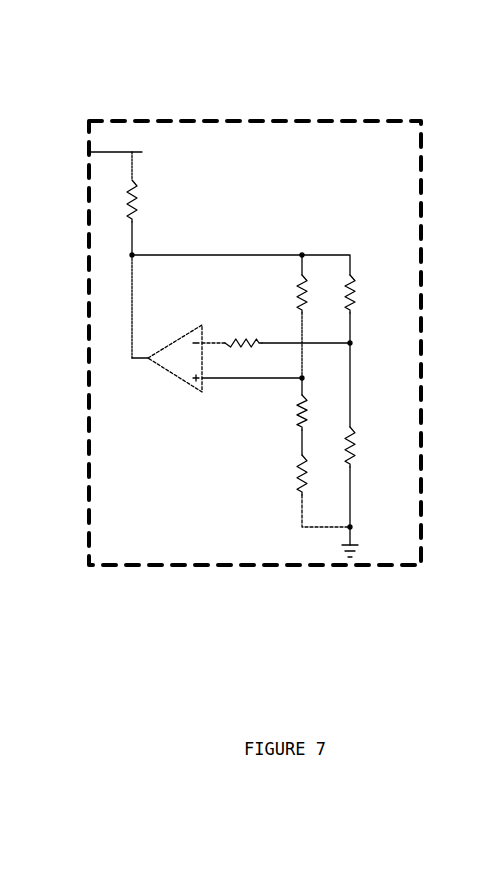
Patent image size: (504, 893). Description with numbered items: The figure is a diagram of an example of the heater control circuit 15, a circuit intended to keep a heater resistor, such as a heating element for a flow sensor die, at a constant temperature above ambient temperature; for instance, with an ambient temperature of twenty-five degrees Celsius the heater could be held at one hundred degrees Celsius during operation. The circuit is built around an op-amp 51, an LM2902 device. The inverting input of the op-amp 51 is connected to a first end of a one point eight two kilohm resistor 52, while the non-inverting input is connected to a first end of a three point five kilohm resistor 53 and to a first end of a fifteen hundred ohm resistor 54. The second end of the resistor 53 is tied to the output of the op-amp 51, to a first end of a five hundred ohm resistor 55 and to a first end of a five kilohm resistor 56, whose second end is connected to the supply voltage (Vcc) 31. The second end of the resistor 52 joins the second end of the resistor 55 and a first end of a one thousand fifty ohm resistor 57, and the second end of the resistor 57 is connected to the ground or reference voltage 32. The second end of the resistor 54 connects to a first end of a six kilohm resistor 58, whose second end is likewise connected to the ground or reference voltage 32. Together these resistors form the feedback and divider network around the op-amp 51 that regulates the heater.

The heater control circuit 15 is at (420, 120).
The voltage (Vcc) 31 is at (118, 154).
The ground or reference voltage 32 is at (342, 551).
The op-amp 51 is at (191, 331).
The 1.82K ohm resistor 52 is at (227, 347).
The 3.5K ohm resistor 53 is at (296, 293).
The 1500 ohm resistor 54 is at (304, 398).
The 500 ohm resistor 55 is at (352, 283).
The 5K ohm resistor 56 is at (128, 201).
The 1050 ohm resistor 57 is at (352, 433).
The 6K ohm resistor 58 is at (292, 490).